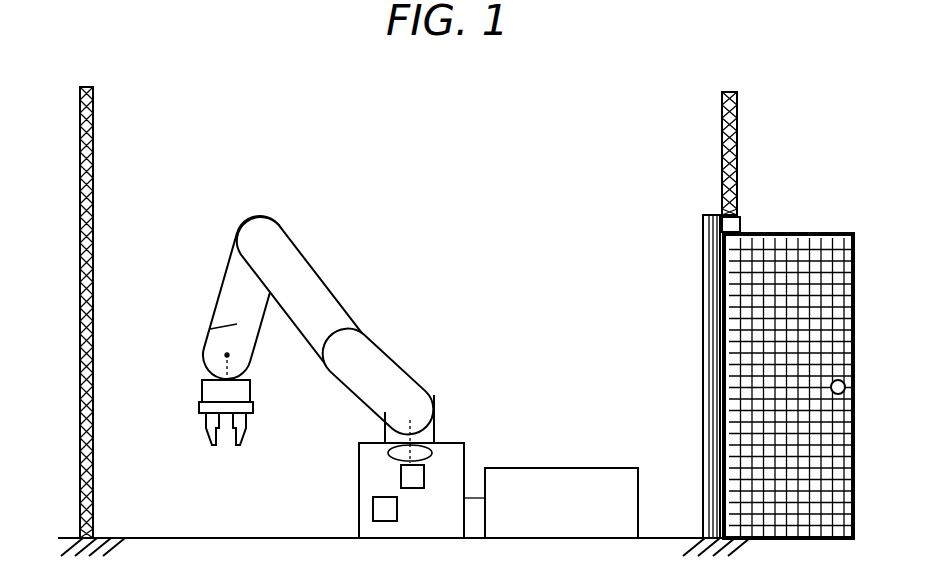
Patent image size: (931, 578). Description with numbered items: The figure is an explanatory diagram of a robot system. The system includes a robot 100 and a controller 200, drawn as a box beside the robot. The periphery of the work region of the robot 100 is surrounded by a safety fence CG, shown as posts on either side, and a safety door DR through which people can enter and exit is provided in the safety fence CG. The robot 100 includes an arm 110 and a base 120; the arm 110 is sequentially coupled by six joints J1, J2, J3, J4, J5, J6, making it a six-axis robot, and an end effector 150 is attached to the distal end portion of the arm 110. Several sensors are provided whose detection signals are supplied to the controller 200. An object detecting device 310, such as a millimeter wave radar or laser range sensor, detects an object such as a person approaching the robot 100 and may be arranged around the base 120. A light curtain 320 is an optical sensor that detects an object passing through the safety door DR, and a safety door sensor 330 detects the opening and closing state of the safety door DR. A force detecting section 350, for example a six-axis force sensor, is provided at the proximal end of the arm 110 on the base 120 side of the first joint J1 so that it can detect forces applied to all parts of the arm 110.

The robot 100 is at (499, 295).
The arm 110 is at (403, 373).
The base 120 is at (466, 452).
The end effector 150 is at (249, 417).
The controller 200 is at (525, 468).
The object detecting device 310 is at (373, 505).
The light curtain 320 is at (716, 216).
The safety door sensor 330 is at (742, 224).
The force detecting section 350 is at (401, 472).
The first joint J1 is at (414, 441).
The second joint J2 is at (349, 351).
The third joint J3 is at (262, 239).
The fourth joint J4 is at (212, 329).
The fifth joint J5 is at (225, 355).
The sixth joint J6 is at (227, 368).
The safety fence CG is at (80, 186).
The safety door DR is at (780, 235).